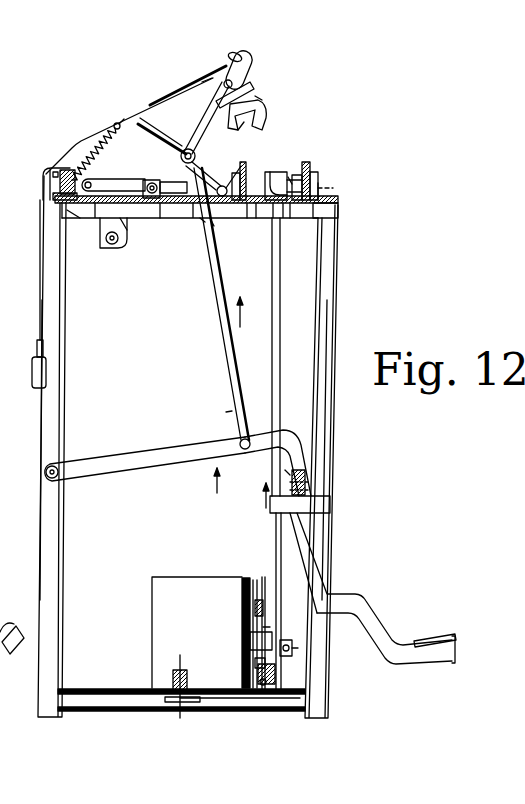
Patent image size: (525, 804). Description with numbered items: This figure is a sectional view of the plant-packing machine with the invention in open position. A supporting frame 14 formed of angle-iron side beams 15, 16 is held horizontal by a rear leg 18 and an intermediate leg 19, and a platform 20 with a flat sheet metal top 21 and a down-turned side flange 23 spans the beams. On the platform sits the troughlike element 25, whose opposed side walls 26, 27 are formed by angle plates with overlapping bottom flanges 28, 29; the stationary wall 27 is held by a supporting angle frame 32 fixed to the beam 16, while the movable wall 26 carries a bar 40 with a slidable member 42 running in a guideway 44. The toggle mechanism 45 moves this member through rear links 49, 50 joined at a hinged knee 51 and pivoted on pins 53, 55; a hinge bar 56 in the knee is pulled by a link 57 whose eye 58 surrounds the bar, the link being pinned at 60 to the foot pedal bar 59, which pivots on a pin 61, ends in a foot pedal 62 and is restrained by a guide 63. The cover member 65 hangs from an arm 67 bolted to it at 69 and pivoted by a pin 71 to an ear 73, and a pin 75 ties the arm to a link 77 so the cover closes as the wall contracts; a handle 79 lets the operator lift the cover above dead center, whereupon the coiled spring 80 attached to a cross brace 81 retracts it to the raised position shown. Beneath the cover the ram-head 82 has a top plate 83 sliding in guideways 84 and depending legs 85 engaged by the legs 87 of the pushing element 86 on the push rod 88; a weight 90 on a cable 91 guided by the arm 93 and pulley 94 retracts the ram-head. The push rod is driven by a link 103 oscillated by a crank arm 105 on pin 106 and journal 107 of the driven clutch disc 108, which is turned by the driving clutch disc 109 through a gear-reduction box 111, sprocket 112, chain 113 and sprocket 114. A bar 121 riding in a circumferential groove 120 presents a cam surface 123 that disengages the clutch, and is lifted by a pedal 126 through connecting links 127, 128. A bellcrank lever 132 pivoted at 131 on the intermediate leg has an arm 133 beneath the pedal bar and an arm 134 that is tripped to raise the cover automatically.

The supporting frame 14 is at (340, 287).
The side beam 15 is at (67, 217).
The side beam 16 is at (338, 219).
The rear leg 18 is at (44, 414).
The intermediate leg 19 is at (334, 420).
The platform 20 is at (260, 212).
The platform top 21 is at (148, 208).
The side flange 23 is at (80, 218).
The troughlike element 25 is at (310, 153).
The side wall 26 is at (212, 172).
The side wall 27 is at (310, 172).
The bottom flange 28 is at (247, 212).
The bottom flange 29 is at (290, 210).
The supporting angle frame 32 is at (317, 183).
The bar 40 is at (212, 230).
The slidable member 42 is at (200, 222).
The guideway 44 is at (234, 185).
The toggle mechanism 45 is at (176, 144).
The rear link 49 is at (173, 175).
The rear link 50 is at (172, 215).
The hinged knee 51 is at (186, 149).
The pin 53 is at (150, 183).
The pin 55 is at (250, 181).
The hinge bar 56 is at (197, 150).
The link 57 is at (213, 306).
The eye 58 is at (157, 133).
The foot pedal bar 59 is at (142, 457).
The pin 60 is at (249, 438).
The pin 61 is at (45, 474).
The foot pedal 62 is at (434, 636).
The guide 63 is at (304, 504).
The cover member 65 is at (212, 102).
The arm 67 is at (163, 97).
The bolt 69 is at (224, 82).
The pin 71 is at (110, 244).
The ear 73 is at (126, 242).
The pin 75 is at (83, 122).
The link 77 is at (115, 184).
The handle 79 is at (240, 56).
The coiled spring 80 is at (100, 150).
The cross brace 81 is at (113, 128).
The ram-head 82 is at (252, 118).
The top plate 83 is at (249, 92).
The guideway 84 is at (273, 84).
The depending leg 85 is at (234, 123).
The ram pushing element 86 is at (288, 177).
The leg 87 is at (253, 156).
The push rod 88 is at (336, 191).
The weight 90 is at (37, 370).
The cable 91 is at (40, 298).
The arm 93 is at (202, 82).
The pulley 94 is at (44, 182).
The link 103 is at (274, 364).
The crank arm 105 is at (290, 652).
The pin 106 is at (263, 504).
The journal 107 is at (292, 645).
The driven clutch disc 108 is at (307, 580).
The driving clutch disc 109 is at (240, 580).
The gear-reduction box 111 is at (152, 656).
The sprocket 112 is at (246, 664).
The chain 113 is at (252, 641).
The sprocket 114 is at (256, 609).
The circumferential groove 120 is at (262, 590).
The bar 121 is at (268, 669).
The cam surface 123 is at (263, 627).
The pedal 126 is at (197, 700).
The connecting link 127 is at (182, 660).
The connecting link 128 is at (264, 684).
The pivot 131 is at (294, 478).
The bellcrank lever 132 is at (275, 531).
The arm 133 is at (278, 473).
The arm 134 is at (312, 553).